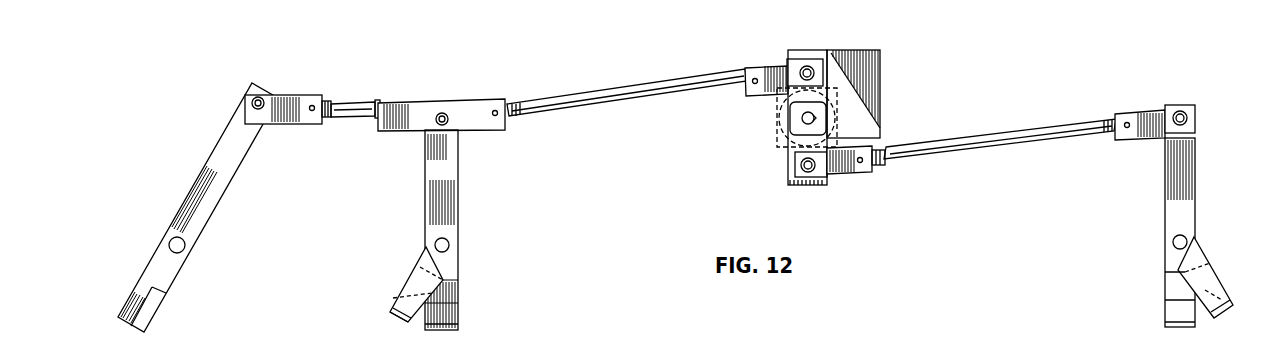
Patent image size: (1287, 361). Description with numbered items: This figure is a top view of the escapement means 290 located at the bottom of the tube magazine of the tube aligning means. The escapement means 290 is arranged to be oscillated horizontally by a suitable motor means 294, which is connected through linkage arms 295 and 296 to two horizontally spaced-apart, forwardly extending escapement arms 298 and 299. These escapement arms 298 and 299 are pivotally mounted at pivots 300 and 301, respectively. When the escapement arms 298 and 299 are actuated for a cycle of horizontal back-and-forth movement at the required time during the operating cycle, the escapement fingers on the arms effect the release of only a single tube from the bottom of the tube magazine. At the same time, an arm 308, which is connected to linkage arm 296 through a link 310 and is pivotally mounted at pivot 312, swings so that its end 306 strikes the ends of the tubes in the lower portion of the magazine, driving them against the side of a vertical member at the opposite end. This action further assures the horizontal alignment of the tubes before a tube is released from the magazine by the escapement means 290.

The escapement means 290 is at (687, 166).
The motor means 294 is at (778, 124).
The linkage arm 295 is at (943, 150).
The linkage arm 296 is at (577, 107).
The escapement arm 298 is at (455, 195).
The escapement arm 299 is at (1172, 180).
The pivot mounting 300 is at (450, 243).
The pivot mounting 301 is at (1173, 238).
The end of arm 306 is at (150, 310).
The arm 308 is at (202, 189).
The link 310 is at (348, 110).
The pivot mounting 312 is at (443, 113).